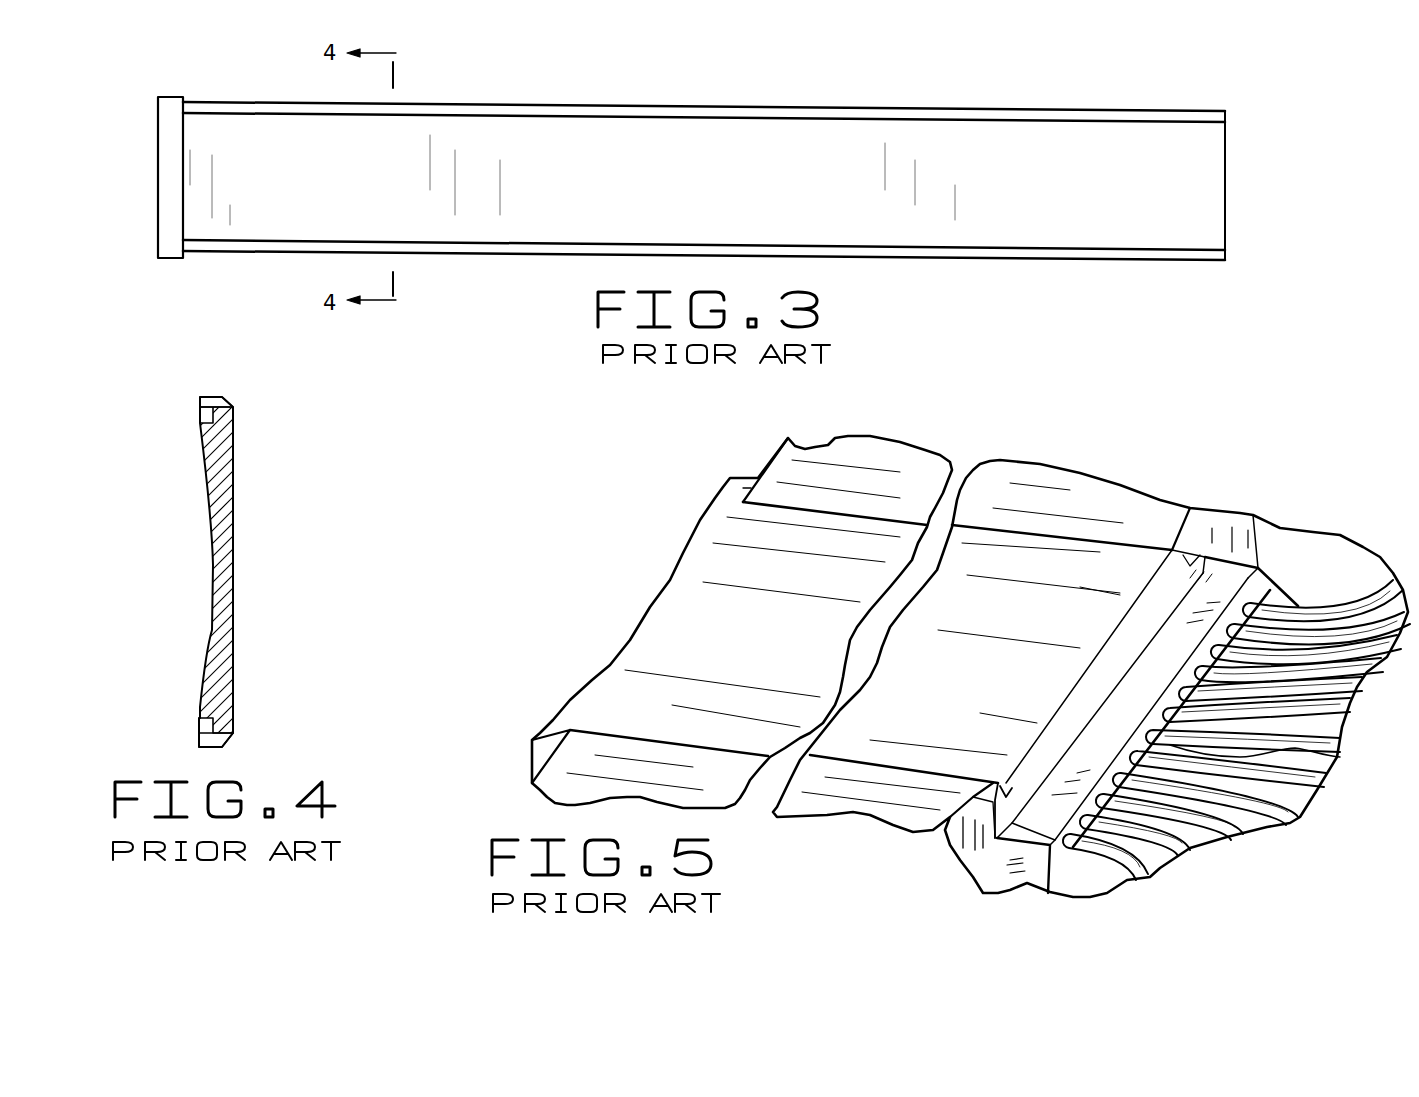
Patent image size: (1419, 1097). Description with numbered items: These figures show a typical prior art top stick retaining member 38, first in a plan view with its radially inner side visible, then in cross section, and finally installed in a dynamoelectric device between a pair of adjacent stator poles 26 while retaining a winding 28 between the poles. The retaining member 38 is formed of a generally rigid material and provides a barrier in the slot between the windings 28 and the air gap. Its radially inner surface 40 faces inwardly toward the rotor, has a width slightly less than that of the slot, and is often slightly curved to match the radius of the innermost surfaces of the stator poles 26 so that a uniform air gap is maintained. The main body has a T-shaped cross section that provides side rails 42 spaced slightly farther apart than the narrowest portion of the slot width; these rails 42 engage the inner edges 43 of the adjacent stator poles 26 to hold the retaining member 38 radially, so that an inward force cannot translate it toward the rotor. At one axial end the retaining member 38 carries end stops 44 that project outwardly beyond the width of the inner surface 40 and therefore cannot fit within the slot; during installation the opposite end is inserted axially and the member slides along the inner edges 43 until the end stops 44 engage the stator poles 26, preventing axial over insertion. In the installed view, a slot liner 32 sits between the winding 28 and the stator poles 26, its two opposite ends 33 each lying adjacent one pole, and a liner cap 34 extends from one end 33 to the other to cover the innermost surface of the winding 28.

In FIG. 5, the stator poles 26 is at (848, 797).
In FIG. 5, the windings 28 is at (1310, 708).
In FIG. 5, the slot liner 32 is at (1280, 590).
In FIG. 5, the ends of the slot liner 33 is at (1243, 568).
In FIG. 5, the liner cap 34 is at (1173, 652).
In FIG. 3, the prior art retaining member 38 is at (669, 169).
In FIG. 4, the prior art retaining member 38 is at (293, 558).
In FIG. 5, the prior art retaining member 38 is at (942, 681).
In FIG. 3, the radially inner surface 40 is at (728, 155).
In FIG. 4, the radially inner surface 40 is at (212, 570).
In FIG. 5, the radially inner surface 40 is at (692, 642).
In FIG. 3, the side rails 42 is at (893, 110).
In FIG. 4, the side rails 42 is at (212, 411).
In FIG. 5, the side rails 42 is at (962, 812).
In FIG. 5, the inner edges of the stator poles 43 is at (1199, 536).
In FIG. 3, the end stops 44 is at (174, 102).
In FIG. 4, the end stops 44 is at (206, 400).
In FIG. 5, the end stops 44 is at (744, 490).